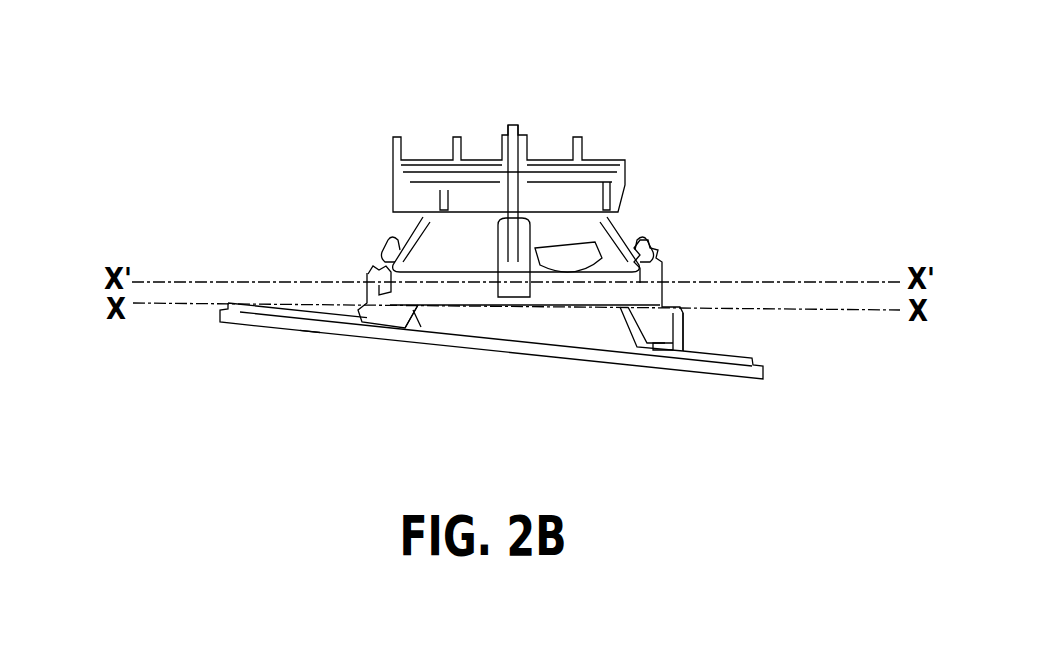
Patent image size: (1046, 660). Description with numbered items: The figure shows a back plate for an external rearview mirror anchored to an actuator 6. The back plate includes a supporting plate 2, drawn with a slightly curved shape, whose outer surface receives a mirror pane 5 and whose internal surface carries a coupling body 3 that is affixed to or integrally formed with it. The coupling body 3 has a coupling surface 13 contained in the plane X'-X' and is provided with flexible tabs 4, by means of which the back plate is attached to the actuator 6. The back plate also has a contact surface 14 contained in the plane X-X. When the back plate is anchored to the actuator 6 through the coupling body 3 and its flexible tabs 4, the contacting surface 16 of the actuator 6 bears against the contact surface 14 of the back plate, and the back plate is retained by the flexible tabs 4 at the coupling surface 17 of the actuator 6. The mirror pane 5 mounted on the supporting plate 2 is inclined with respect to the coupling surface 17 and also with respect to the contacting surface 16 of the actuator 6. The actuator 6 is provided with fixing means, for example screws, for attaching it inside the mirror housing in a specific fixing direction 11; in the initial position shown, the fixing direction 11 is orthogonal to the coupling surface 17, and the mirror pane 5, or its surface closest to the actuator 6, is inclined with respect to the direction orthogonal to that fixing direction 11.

The supporting plate 2 is at (740, 358).
The coupling body 3 is at (683, 320).
The flexible tabs 4 is at (368, 277).
The mirror pane 5 is at (310, 332).
The actuator 6 is at (612, 235).
The fixing direction 11 is at (512, 210).
The coupling surface 13 is at (607, 250).
The contact surface 14 is at (572, 307).
The contacting surface 16 is at (383, 263).
The coupling surface 17 is at (382, 277).